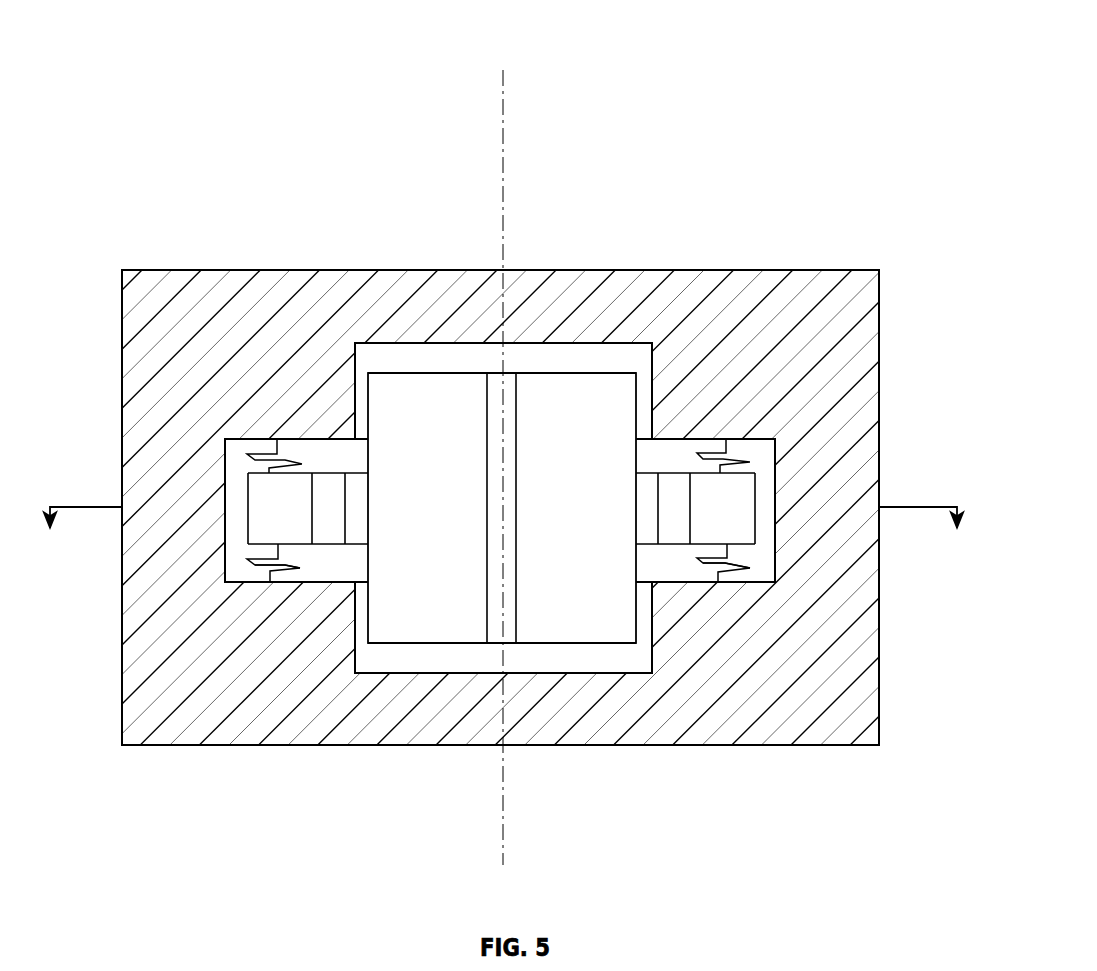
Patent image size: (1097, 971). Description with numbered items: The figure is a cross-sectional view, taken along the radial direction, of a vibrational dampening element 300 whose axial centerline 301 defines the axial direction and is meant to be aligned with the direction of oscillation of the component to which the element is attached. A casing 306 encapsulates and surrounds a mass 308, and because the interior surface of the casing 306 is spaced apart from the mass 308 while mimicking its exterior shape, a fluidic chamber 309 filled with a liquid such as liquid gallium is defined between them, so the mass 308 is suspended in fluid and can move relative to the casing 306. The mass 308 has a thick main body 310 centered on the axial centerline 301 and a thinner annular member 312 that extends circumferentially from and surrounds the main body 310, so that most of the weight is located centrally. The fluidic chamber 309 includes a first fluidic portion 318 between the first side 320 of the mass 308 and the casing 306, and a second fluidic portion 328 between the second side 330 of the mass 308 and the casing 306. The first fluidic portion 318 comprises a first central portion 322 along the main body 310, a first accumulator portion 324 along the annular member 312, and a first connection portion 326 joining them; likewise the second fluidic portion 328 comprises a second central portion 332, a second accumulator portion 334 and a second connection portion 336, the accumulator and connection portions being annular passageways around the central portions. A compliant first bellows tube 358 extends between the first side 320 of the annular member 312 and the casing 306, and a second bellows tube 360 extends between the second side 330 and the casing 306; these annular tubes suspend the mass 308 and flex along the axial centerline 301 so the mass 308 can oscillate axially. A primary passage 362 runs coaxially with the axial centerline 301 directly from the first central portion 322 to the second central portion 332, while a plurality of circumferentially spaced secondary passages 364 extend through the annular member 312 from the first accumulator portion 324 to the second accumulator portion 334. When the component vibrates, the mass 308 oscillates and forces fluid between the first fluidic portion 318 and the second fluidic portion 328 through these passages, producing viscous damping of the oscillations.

The vibrational dampening element 300 is at (892, 77).
The axial centerline 301 is at (503, 93).
The casing 306 is at (838, 562).
The mass 308 is at (677, 437).
The fluidic chamber 309 is at (503, 473).
The main body 310 is at (405, 410).
The annular member 312 is at (273, 517).
The first fluidic portion 318 is at (452, 347).
The first side 320 is at (327, 440).
The first central portion 322 is at (537, 345).
The first accumulator portion 324 is at (307, 473).
The first connection portion 326 is at (358, 390).
The second fluidic portion 328 is at (545, 666).
The second side 330 is at (388, 676).
The second central portion 332 is at (441, 664).
The second accumulator portion 334 is at (307, 575).
The second connection portion 336 is at (350, 615).
The first bellows tube 358 is at (247, 453).
The second bellows tube 360 is at (247, 559).
The primary passage 362 is at (492, 652).
The secondary passages 364 is at (320, 498).